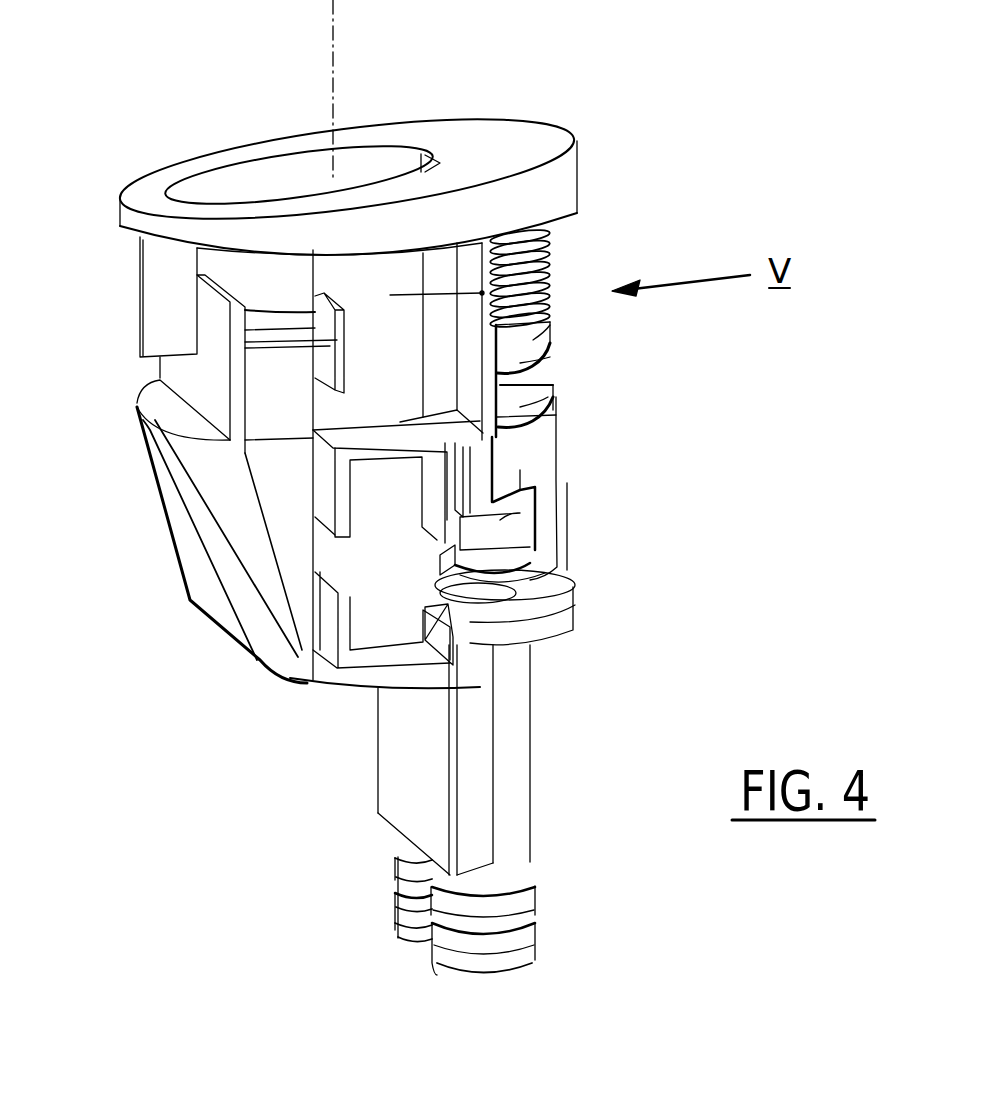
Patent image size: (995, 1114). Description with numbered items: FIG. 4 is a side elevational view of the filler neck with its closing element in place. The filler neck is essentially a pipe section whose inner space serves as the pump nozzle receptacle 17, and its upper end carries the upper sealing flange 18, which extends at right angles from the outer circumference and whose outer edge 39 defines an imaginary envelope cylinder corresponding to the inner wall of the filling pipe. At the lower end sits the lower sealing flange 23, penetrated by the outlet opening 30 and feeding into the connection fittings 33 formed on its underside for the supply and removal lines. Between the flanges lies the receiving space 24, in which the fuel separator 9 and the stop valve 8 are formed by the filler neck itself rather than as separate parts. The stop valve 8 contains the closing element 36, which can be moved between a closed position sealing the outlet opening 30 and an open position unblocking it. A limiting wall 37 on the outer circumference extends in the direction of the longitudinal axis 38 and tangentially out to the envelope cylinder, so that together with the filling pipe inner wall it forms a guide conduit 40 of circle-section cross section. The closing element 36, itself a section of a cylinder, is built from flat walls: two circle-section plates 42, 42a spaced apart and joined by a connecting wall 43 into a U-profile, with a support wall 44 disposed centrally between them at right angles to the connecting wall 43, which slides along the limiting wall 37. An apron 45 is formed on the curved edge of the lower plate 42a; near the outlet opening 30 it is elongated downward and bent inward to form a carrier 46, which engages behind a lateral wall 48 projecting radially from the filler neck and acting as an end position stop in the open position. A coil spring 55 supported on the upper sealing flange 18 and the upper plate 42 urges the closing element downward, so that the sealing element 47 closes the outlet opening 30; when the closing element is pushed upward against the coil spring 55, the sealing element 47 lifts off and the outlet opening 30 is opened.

The stop valve 8 is at (533, 465).
The fuel separator 9 is at (387, 363).
The pump nozzle receptacle 17 is at (254, 197).
The upper sealing flange 18 is at (473, 157).
The lower sealing flange 23 is at (463, 660).
The receiving space 24 is at (560, 243).
The outlet opening 30 is at (510, 583).
The connection fittings 33 is at (510, 872).
The closing element 36 is at (508, 455).
The limiting wall 37 is at (420, 294).
The longitudinal axis 38 is at (334, 32).
The outer edge 39 is at (560, 174).
The guide conduit 40 is at (572, 284).
The upper plate 42 is at (551, 324).
The lower plate 42a is at (554, 389).
The connecting wall 43 is at (556, 415).
The support wall 44 is at (551, 358).
The apron 45 is at (523, 437).
The carrier 46 is at (503, 553).
The sealing element 47 is at (546, 570).
The lateral wall 48 is at (500, 517).
The coil spring 55 is at (558, 292).